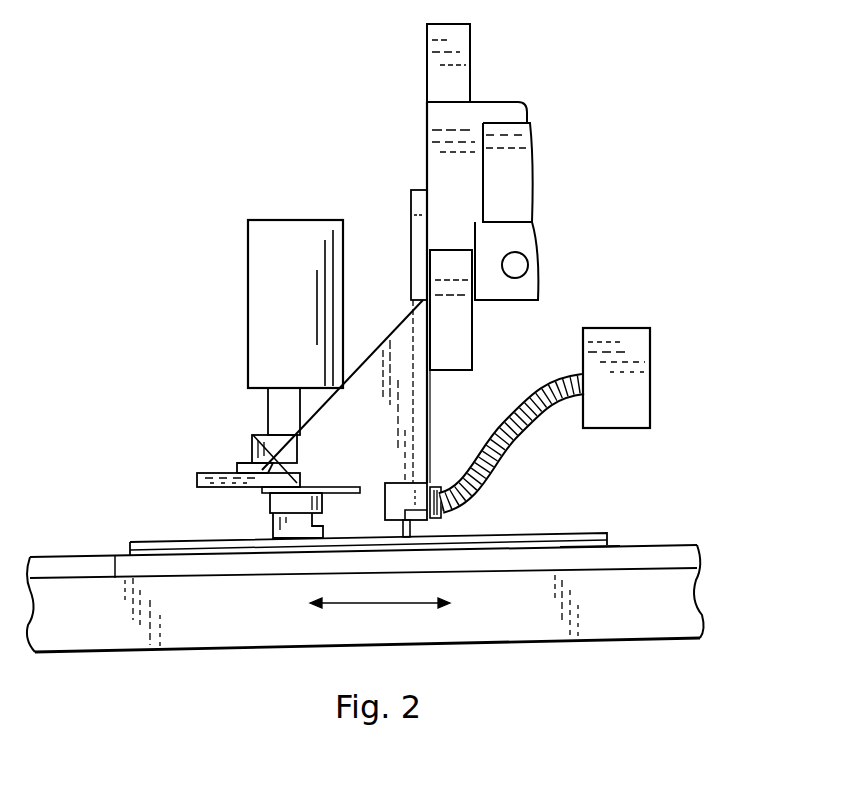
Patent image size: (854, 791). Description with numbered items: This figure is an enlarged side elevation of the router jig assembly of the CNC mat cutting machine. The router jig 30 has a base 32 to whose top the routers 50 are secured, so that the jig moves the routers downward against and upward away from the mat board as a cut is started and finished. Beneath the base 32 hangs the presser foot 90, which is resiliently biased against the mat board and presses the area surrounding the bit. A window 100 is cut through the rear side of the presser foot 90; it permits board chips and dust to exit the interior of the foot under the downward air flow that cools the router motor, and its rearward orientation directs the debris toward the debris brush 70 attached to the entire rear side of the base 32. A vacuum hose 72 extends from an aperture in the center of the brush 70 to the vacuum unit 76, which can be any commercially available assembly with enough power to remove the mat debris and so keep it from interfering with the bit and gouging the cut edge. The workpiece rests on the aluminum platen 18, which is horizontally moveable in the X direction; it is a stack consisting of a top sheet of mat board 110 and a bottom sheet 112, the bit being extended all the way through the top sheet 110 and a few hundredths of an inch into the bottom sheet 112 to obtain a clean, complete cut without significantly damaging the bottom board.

The platen 18 is at (587, 617).
The router jig 30 is at (400, 428).
The base 32 is at (256, 435).
The router 50 is at (275, 313).
The debris brush 70 is at (418, 531).
The vacuum hose 72 is at (503, 434).
The vacuum unit 76 is at (633, 402).
The presser foot 90 is at (258, 525).
The window 100 is at (346, 486).
The top sheet of mat board 110 is at (568, 533).
The bottom sheet 112 is at (596, 545).